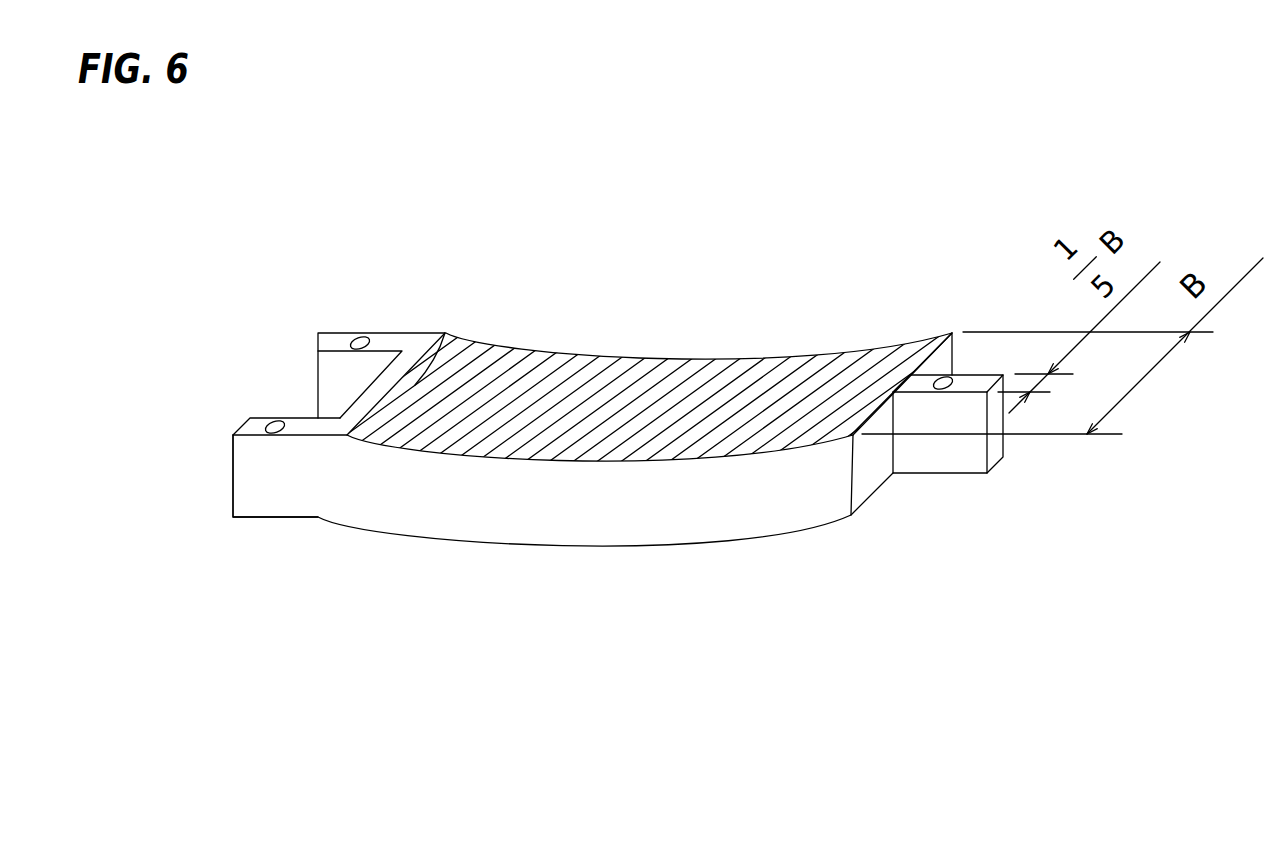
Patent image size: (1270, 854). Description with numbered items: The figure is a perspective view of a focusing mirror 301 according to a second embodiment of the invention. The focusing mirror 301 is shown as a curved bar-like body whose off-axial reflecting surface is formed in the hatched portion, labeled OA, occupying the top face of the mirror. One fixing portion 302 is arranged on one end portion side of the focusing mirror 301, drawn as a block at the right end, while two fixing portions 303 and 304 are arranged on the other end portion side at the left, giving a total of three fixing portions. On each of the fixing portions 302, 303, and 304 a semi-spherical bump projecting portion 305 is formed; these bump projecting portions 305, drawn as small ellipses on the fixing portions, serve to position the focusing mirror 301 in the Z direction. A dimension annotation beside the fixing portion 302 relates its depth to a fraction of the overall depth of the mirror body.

The focusing mirror 301 is at (518, 512).
The fixing portion 302 is at (949, 463).
The fixing portion 303 is at (273, 502).
The fixing portion 304 is at (337, 333).
The semi-spherical bump projecting portion 305 is at (275, 423).
The optical effective area (hatched surface) OA is at (585, 380).